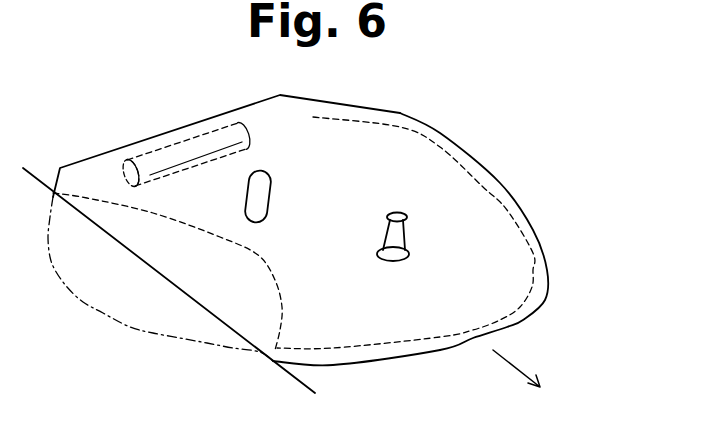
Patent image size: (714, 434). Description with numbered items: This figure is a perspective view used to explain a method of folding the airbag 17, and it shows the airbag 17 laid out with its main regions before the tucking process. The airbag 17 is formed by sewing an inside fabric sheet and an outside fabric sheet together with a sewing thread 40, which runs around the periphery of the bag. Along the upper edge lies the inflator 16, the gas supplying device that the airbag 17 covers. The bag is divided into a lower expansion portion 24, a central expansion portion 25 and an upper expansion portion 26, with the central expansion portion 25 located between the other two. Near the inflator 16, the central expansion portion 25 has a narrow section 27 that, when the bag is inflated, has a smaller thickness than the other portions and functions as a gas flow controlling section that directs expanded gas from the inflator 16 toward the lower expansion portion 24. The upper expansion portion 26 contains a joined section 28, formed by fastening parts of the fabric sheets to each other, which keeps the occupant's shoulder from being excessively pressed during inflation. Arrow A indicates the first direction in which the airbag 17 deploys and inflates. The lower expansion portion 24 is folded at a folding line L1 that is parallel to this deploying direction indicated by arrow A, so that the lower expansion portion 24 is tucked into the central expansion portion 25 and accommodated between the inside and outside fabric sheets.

The inflator 16 is at (182, 132).
The airbag 17 is at (487, 135).
The lower expansion portion 24 is at (272, 273).
The central expansion portion 25 is at (402, 322).
The upper expansion portion 26 is at (475, 197).
The narrow section 27 is at (268, 192).
The joined section 28 is at (403, 235).
The sewing thread 40 is at (533, 253).
The folding line L1 is at (290, 378).
The arrow A is at (527, 379).